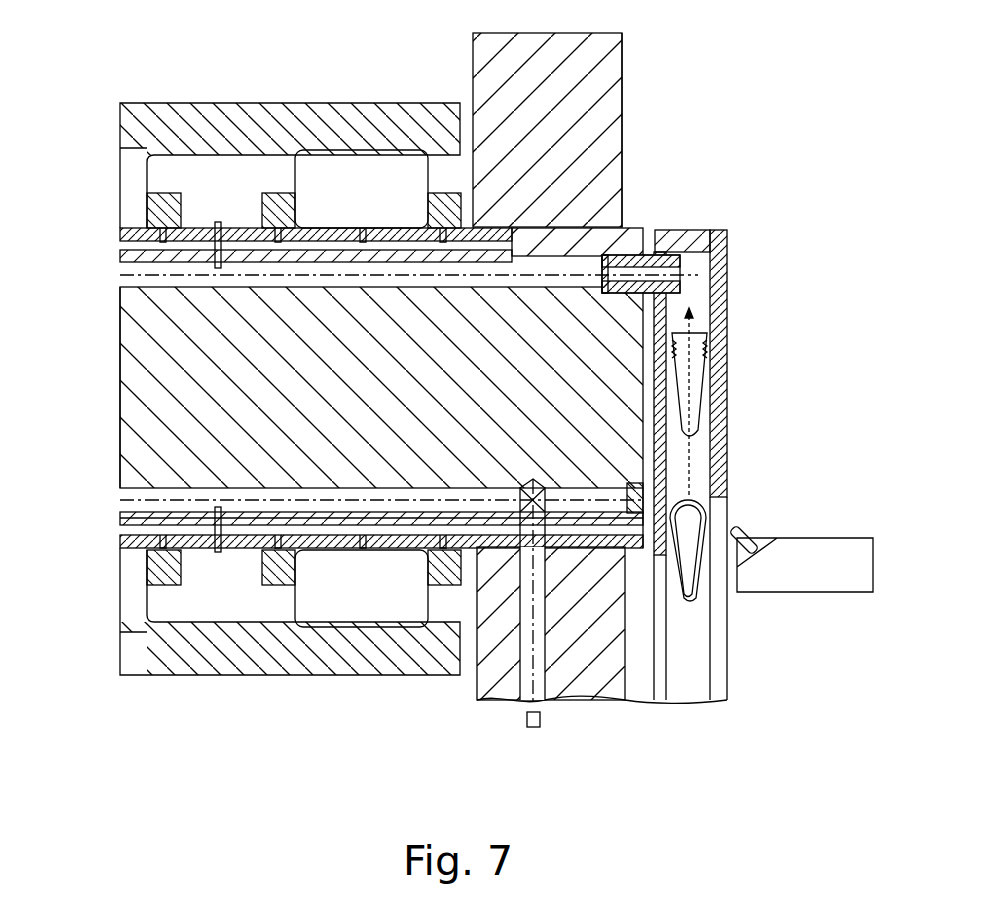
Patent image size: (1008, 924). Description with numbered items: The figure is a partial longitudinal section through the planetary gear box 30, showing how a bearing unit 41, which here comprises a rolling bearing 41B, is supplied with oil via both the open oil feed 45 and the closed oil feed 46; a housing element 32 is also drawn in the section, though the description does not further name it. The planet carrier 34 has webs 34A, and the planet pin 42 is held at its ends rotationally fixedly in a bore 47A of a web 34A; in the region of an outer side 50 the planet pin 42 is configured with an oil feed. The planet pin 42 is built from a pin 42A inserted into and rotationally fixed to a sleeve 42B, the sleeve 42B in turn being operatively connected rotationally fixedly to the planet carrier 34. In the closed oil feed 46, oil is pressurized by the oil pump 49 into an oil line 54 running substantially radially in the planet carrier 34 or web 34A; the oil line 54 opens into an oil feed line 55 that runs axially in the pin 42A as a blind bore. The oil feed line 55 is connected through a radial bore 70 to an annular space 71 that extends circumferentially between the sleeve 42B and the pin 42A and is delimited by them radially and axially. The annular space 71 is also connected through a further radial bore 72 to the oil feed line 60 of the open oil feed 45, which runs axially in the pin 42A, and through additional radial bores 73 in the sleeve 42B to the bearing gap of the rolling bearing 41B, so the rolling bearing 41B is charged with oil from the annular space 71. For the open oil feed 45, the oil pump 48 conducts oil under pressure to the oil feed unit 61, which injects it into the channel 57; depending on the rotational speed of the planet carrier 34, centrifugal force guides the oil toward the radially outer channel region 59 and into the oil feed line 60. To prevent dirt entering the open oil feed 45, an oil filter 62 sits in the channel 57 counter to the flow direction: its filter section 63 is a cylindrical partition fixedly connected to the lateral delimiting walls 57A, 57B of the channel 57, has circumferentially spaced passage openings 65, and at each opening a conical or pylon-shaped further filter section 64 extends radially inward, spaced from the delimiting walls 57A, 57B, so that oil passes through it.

The planetary gear box 30 is at (748, 150).
The housing 32 is at (236, 124).
The planet carrier 34 is at (632, 98).
The web 34A is at (617, 70).
The bearing unit 41 is at (283, 170).
The rolling bearing 41B is at (267, 183).
The planet pin 42 is at (138, 360).
The pin 42A is at (140, 427).
The sleeve 42B is at (646, 230).
The open oil feed 45 is at (740, 400).
The closed oil feed 46 is at (505, 713).
The bore 47A is at (587, 243).
The oil pump 48 is at (853, 534).
The oil pump 49 is at (545, 728).
The outer side 50 is at (213, 224).
The oil line 54 is at (533, 668).
The oil feed line 55 is at (120, 500).
The channel 57 is at (701, 455).
The delimiting wall 57A is at (668, 498).
The delimiting wall 57B is at (711, 352).
The radially outer channel region 59 is at (715, 250).
The oil feed line 60 is at (632, 216).
The oil feed unit 61 is at (750, 526).
The oil filter 62 is at (718, 334).
The filter section 63 is at (702, 325).
The further filter section 64 is at (707, 378).
The passage opening 65 is at (706, 280).
The radial bore 70 is at (218, 554).
The annular space 71 is at (125, 541).
The further radial bore 72 is at (213, 254).
The additional radial bore 73 is at (265, 228).